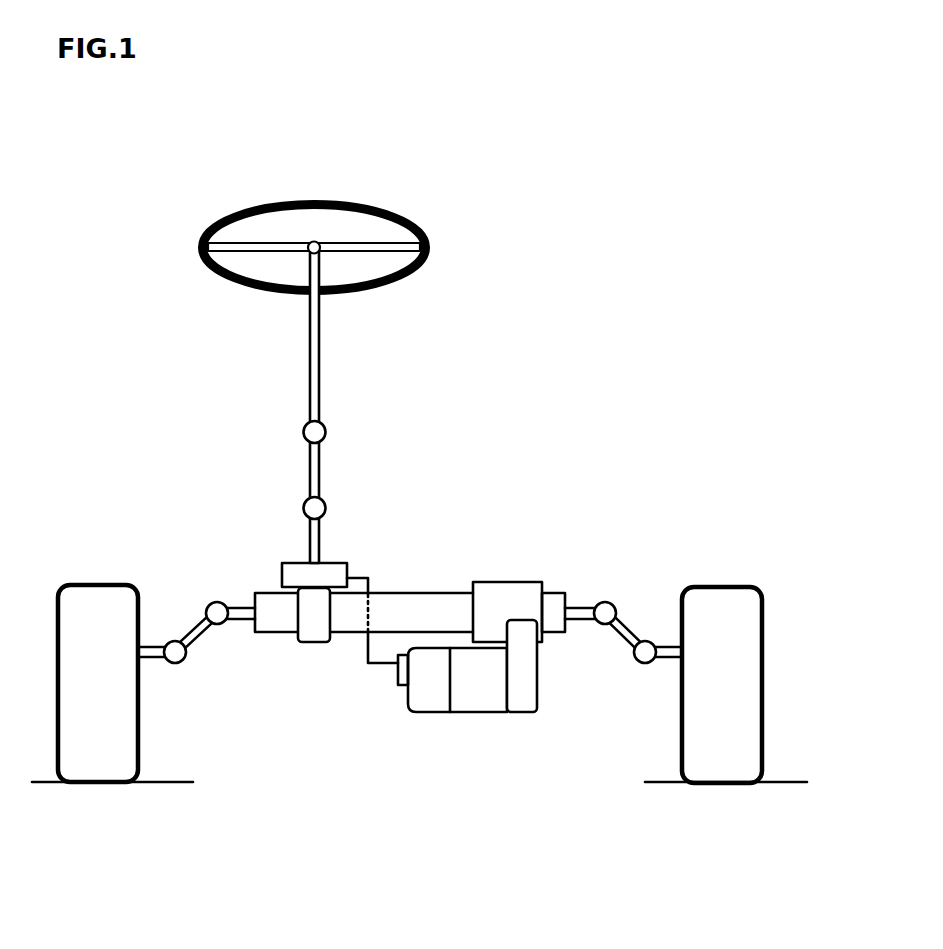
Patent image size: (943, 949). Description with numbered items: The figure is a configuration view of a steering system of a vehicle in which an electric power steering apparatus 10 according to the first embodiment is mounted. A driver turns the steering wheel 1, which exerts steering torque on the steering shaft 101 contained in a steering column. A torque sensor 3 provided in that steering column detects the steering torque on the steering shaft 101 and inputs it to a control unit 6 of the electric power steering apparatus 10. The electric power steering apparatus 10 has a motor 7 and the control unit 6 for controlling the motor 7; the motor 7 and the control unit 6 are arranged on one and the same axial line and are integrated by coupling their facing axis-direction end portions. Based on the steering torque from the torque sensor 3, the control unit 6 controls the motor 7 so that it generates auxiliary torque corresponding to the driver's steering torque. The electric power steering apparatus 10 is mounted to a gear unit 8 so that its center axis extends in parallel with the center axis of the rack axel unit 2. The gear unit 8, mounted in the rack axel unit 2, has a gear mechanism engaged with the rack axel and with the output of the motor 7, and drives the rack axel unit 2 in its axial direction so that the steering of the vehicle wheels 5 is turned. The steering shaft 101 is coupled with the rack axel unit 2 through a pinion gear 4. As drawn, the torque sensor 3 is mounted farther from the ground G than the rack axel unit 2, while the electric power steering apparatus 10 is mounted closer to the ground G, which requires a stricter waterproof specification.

The steering wheel 1 is at (433, 252).
The steering shaft 101 is at (320, 348).
The rack axel unit 2 is at (415, 607).
The torque sensor 3 is at (282, 577).
The pinion gear 4 is at (312, 625).
The vehicle wheels 5 is at (90, 600).
The control unit 6 is at (433, 697).
The motor 7 is at (475, 695).
The gear unit 8 is at (527, 698).
The electric power steering apparatus 10 is at (413, 740).
The ground G is at (168, 780).